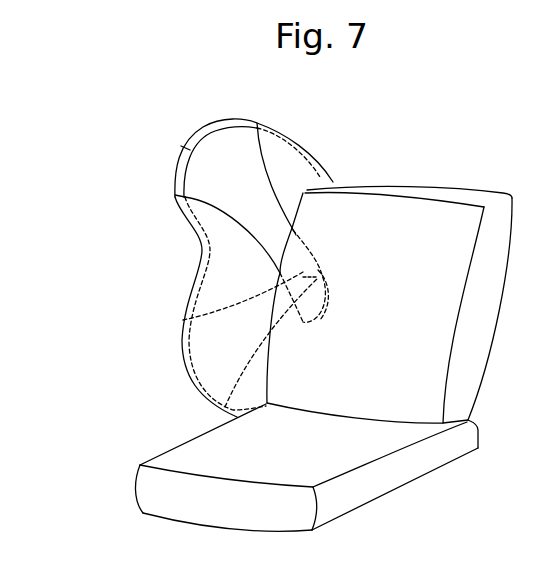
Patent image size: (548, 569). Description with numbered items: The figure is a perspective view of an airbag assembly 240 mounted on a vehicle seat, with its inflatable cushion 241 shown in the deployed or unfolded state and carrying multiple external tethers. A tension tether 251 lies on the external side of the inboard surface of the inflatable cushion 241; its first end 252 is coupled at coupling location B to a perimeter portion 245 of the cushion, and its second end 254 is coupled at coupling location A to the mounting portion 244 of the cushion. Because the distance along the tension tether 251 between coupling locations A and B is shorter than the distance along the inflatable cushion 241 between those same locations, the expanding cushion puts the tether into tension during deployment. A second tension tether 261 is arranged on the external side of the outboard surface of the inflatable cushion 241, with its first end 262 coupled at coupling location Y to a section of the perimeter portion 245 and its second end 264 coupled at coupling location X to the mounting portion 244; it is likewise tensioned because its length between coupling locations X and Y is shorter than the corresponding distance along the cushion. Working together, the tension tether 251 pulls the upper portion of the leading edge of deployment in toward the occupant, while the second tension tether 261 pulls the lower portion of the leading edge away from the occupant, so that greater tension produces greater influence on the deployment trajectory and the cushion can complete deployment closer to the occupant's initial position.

The airbag assembly 240 is at (90, 204).
The inflatable cushion 241 is at (267, 154).
The mounting portion 244 is at (311, 301).
The perimeter portion 245 is at (219, 124).
The tension tether 251 is at (247, 188).
The first end 252 is at (185, 146).
The second end 254 is at (297, 267).
The second tension tether 261 is at (242, 354).
The first end 262 is at (208, 402).
The second end 264 is at (287, 320).
The coupling location A is at (312, 285).
The coupling location B is at (179, 177).
The coupling location X is at (304, 313).
The coupling location Y is at (180, 371).